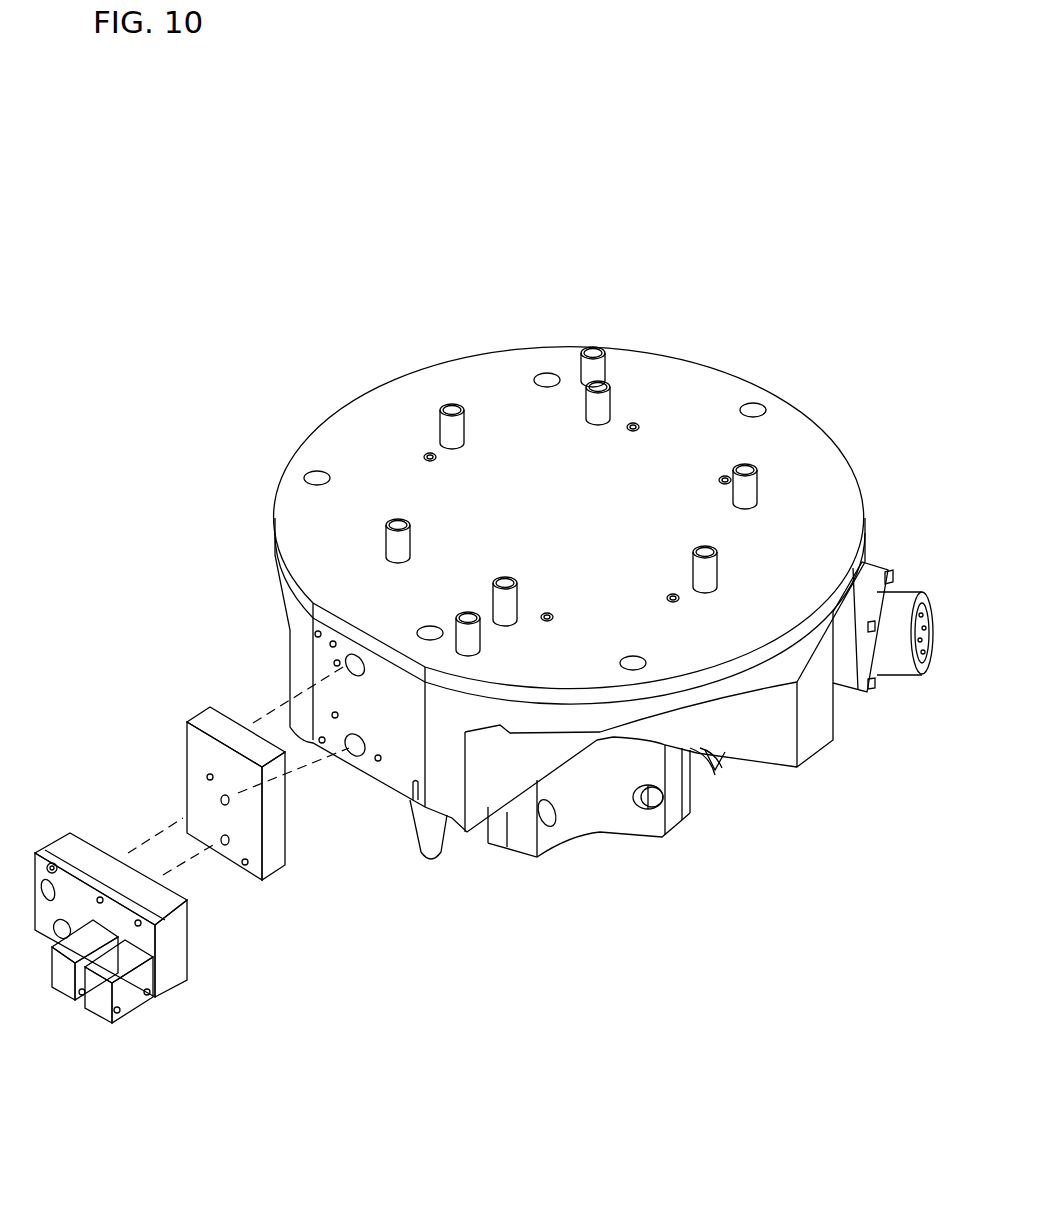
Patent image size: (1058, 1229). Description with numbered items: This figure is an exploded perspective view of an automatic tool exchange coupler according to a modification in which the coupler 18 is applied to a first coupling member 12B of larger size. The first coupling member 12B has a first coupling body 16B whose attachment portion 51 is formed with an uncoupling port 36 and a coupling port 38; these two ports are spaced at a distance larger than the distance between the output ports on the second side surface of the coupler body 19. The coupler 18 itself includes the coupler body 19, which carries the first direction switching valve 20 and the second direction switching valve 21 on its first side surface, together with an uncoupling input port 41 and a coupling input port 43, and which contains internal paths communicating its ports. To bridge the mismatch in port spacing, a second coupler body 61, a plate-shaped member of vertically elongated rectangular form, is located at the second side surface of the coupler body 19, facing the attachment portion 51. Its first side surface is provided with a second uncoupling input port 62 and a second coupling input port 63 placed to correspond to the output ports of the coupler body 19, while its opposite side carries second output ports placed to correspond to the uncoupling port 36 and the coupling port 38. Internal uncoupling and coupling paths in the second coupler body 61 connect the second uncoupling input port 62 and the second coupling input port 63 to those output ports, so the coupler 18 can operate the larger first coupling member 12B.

The first coupling member 12B is at (822, 420).
The first coupling body 16B is at (404, 408).
The attachment portion 51 is at (403, 690).
The uncoupling port 36 is at (352, 663).
The coupling port 38 is at (356, 752).
The second coupler body 61 is at (212, 723).
The second uncoupling input port 62 is at (213, 800).
The second coupling input port 63 is at (225, 850).
The coupler 18 is at (67, 758).
The coupler body 19 is at (70, 852).
The uncoupling input port 41 is at (40, 888).
The coupling input port 43 is at (62, 930).
The first direction switching valve 20 is at (63, 980).
The second direction switching valve 21 is at (100, 1000).